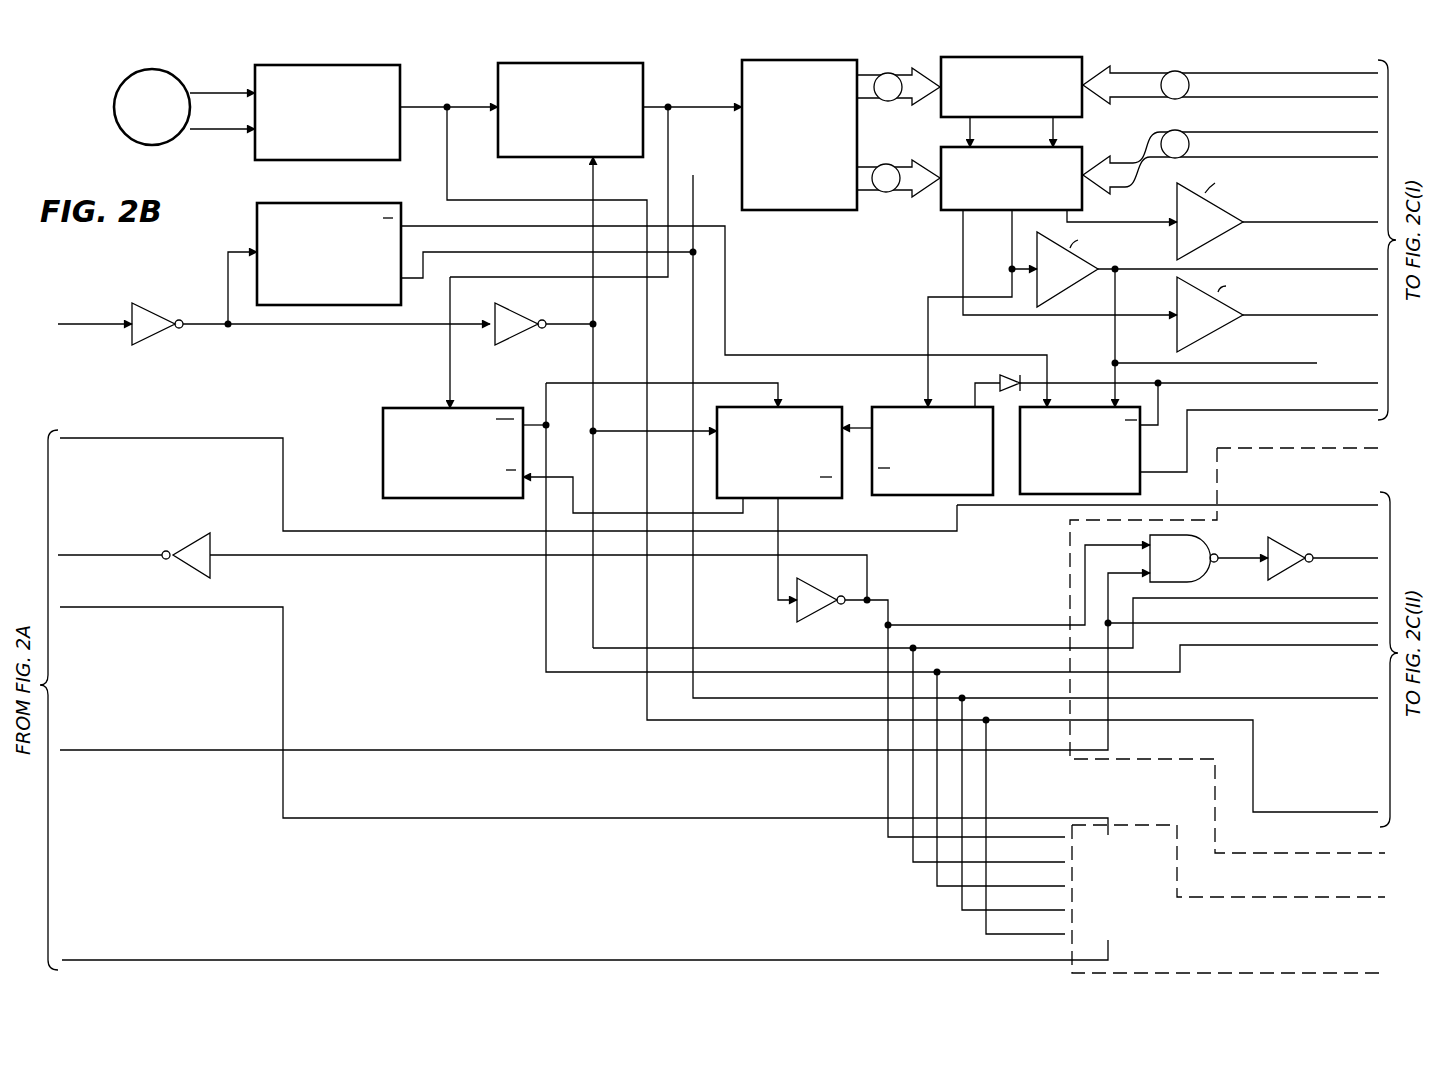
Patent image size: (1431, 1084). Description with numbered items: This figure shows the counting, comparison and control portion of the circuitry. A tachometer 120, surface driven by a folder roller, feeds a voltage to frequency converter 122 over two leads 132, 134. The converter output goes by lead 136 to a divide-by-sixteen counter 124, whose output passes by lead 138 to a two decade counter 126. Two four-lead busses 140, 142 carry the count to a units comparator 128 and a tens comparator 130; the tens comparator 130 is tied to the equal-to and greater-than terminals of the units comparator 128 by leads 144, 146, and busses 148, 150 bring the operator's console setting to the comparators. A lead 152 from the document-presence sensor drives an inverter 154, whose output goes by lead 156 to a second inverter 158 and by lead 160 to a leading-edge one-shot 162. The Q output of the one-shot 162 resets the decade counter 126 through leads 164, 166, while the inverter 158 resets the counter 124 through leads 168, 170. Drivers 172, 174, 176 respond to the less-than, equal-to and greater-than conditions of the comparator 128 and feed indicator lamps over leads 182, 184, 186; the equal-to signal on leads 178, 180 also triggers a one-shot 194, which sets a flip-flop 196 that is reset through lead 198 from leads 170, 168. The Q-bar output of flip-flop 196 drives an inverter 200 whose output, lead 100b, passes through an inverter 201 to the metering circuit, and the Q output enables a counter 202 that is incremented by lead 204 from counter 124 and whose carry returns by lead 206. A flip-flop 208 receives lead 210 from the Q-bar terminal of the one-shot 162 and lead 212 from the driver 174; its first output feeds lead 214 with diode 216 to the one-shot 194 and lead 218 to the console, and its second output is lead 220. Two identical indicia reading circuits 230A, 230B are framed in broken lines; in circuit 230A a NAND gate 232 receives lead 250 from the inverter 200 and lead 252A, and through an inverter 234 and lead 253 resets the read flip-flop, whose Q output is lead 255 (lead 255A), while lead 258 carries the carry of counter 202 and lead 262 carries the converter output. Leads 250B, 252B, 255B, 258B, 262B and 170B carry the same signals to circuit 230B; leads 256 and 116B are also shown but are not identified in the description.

The tachometer 120 is at (122, 94).
The voltage to frequency converter 122 is at (398, 70).
The divide-by-sixteen counter 124 is at (636, 70).
The two decade counter 126 is at (742, 131).
The units comparator 128 is at (943, 207).
The tens comparator 130 is at (1080, 60).
The lead 132 is at (200, 132).
The lead 134 is at (212, 90).
The lead 136 is at (432, 102).
The lead 138 is at (684, 102).
The bus 140 is at (890, 198).
The bus 142 is at (878, 70).
The lead 144 is at (970, 127).
The lead 146 is at (1053, 128).
The four-lead bus 148 is at (1277, 132).
The four-lead bus 150 is at (1302, 72).
The lead 152 is at (80, 326).
The inverter 154 is at (160, 332).
The lead 156 is at (288, 328).
The second inverter 158 is at (520, 330).
The lead 160 is at (228, 270).
The leading-edge one-shot multivibrator 162 is at (257, 215).
The lead 164 is at (540, 277).
The lead 166 is at (697, 208).
The lead 168 is at (566, 330).
The lead 170 is at (594, 308).
The driver 172 is at (1162, 211).
The driver 174 is at (1074, 258).
The driver 176 is at (1231, 312).
The lead 178 is at (1004, 254).
The lead 180 is at (1012, 278).
The lead 182 is at (1351, 221).
The lead 184 is at (1351, 267).
The lead 186 is at (1356, 310).
The one-shot multivibrator 194 is at (880, 407).
The flip-flop 196 is at (832, 407).
The lead 198 is at (680, 408).
The inverter 200 is at (834, 610).
The inverter 201 is at (212, 536).
The counter 202 is at (383, 421).
The lead 204 is at (450, 364).
The lead 206 is at (778, 384).
The flip-flop 208 is at (1148, 438).
The lead 210 is at (418, 224).
The lead 212 is at (1114, 356).
The lead 214 is at (1140, 363).
The diode 216 is at (1004, 374).
The lead 218 is at (1260, 383).
The lead 220 is at (1306, 416).
The indicia reading circuit 230A is at (1068, 556).
The indicia reading circuit 230B is at (1160, 806).
The NAND gate 232 is at (1209, 558).
The inverter 234 is at (1274, 536).
The lead 250 is at (934, 624).
The lead 250B is at (886, 834).
The lead 252A is at (82, 749).
The lead 252B is at (98, 960).
The lead 253 is at (1352, 550).
The lead 255 is at (1344, 503).
The lead 255A is at (76, 438).
The lead 255B is at (76, 608).
The signal line 256 is at (1304, 620).
The lead 258 is at (546, 634).
The lead 258B is at (936, 885).
The lead 262 is at (448, 172).
The lead 262B is at (984, 934).
The lead 100b is at (76, 555).
The signal line 116B is at (960, 910).
The lead 170B is at (912, 860).